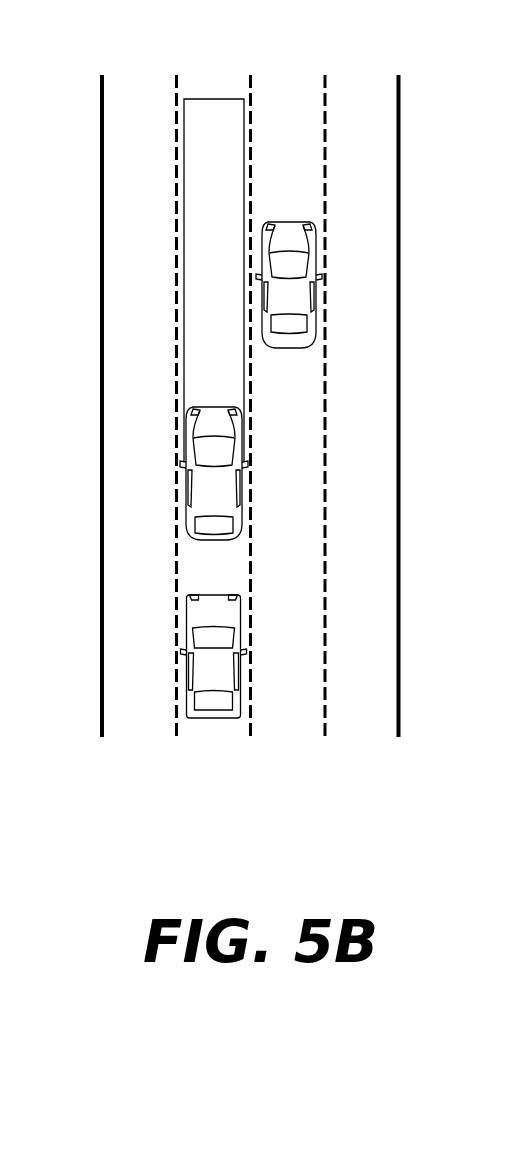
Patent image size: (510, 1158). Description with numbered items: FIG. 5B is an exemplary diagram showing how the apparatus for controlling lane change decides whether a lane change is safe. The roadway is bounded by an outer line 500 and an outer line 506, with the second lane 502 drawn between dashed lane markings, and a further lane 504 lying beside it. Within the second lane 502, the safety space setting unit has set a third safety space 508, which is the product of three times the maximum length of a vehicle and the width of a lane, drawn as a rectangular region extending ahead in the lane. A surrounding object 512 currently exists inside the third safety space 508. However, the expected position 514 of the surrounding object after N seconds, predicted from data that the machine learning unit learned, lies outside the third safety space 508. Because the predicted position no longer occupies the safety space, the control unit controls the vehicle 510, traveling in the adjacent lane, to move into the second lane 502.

The left solid lane boundary line 500 is at (137, 82).
The second lane 502 is at (210, 82).
The center lane / dashed lane markings 504 is at (288, 82).
The right solid lane boundary line 506 is at (363, 82).
The third safety space 508 is at (183, 373).
The vehicle 510 is at (314, 297).
The surrounding object 512 is at (186, 513).
The expected position 514 is at (217, 719).